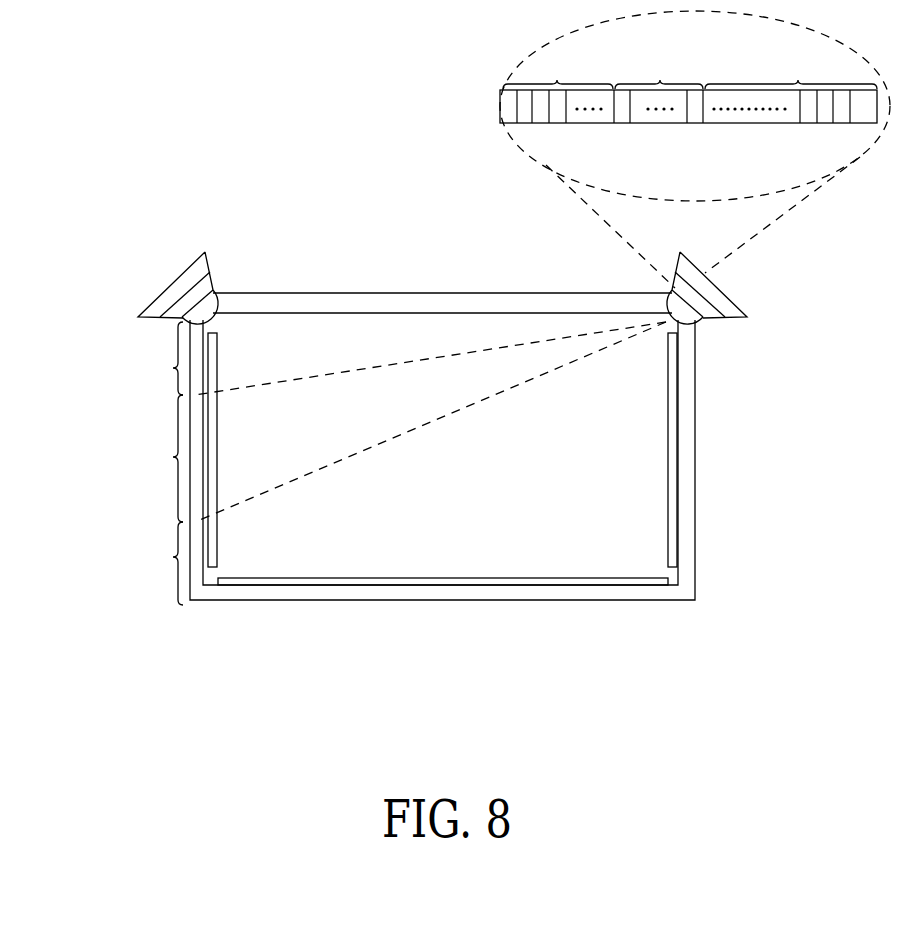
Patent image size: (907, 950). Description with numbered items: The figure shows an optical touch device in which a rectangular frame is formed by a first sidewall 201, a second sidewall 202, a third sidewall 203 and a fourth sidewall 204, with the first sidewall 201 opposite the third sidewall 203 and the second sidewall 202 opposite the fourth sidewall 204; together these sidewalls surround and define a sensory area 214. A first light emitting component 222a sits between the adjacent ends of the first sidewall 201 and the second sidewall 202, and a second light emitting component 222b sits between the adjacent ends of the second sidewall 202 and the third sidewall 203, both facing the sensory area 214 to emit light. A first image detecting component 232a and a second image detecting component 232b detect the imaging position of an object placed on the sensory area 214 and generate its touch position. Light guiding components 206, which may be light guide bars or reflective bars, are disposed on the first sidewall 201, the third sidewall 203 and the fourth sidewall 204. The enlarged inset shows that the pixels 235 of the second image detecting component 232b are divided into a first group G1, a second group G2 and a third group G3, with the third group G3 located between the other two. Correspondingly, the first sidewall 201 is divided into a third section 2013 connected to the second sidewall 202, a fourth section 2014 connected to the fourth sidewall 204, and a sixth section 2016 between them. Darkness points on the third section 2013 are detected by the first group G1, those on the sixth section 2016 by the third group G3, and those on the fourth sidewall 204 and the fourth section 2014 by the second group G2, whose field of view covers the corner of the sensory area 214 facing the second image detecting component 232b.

The pixels 235 is at (523, 110).
The first group G1 is at (558, 71).
The second group G2 is at (791, 71).
The third group G3 is at (659, 71).
The second sidewall 202 is at (433, 302).
The first image detecting component 232a is at (173, 292).
The first light emitting component 222a is at (203, 307).
The second image detecting component 232b is at (720, 302).
The second light emitting component 222b is at (672, 297).
The sensory area 214 is at (613, 392).
The third sidewall 203 is at (687, 480).
The light guiding component 206 is at (213, 547).
The fourth sidewall 204 is at (538, 595).
The third section 2013 is at (149, 358).
The sixth section 2016 is at (149, 458).
The fourth section 2014 is at (149, 563).
The first sidewall 201 is at (200, 503).